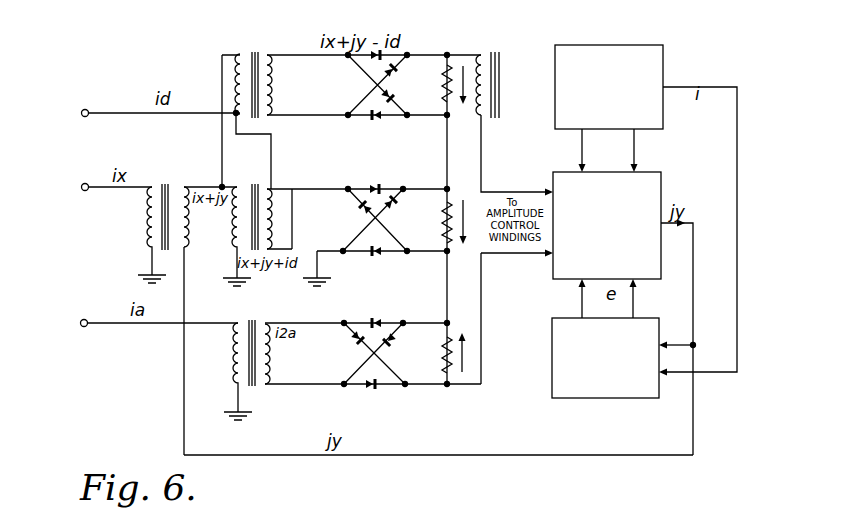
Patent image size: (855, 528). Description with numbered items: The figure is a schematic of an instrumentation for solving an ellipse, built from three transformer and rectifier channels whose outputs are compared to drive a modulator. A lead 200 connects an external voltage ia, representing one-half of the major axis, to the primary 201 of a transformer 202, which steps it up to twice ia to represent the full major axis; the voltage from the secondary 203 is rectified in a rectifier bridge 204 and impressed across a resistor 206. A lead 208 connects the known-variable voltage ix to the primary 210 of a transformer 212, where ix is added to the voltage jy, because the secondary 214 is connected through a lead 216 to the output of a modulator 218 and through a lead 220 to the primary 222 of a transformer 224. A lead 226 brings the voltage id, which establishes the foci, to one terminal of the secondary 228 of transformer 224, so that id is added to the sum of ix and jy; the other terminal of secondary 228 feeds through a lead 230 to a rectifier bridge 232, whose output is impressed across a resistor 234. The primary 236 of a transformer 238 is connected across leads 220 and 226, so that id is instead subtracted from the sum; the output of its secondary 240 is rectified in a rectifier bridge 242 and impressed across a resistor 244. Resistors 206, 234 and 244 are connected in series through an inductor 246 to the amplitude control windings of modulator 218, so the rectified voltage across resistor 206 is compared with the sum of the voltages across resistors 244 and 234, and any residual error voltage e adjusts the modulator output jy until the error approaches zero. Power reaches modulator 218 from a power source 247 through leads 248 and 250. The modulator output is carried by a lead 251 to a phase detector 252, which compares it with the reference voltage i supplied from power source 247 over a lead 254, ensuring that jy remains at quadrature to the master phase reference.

The lead 200 is at (121, 325).
The primary 201 is at (233, 339).
The transformer 202 is at (257, 323).
The secondary 203 is at (269, 361).
The rectifier bridge 204 is at (360, 358).
The resistor 206 is at (437, 340).
The lead 208 is at (121, 189).
The primary 210 is at (146, 224).
The transformer 212 is at (167, 186).
The secondary 214 is at (186, 224).
The lead 216 is at (186, 297).
The modulator 218 is at (662, 186).
The lead 220 is at (238, 180).
The primary 222 is at (234, 240).
The transformer 224 is at (259, 185).
The lead 226 is at (121, 110).
The secondary 228 is at (270, 198).
The lead 230 is at (293, 201).
The rectifier bridge 232 is at (365, 219).
The resistor 234 is at (441, 221).
The primary 236 is at (244, 53).
The transformer 238 is at (259, 51).
The secondary 240 is at (271, 78).
The rectifier bridge 242 is at (364, 90).
The resistor 244 is at (441, 70).
The inductor 246 is at (484, 56).
The power source 247 is at (589, 50).
The lead 248 is at (580, 148).
The lead 250 is at (636, 147).
The lead 251 is at (683, 342).
The phase detector 252 is at (579, 397).
The lead 254 is at (676, 86).